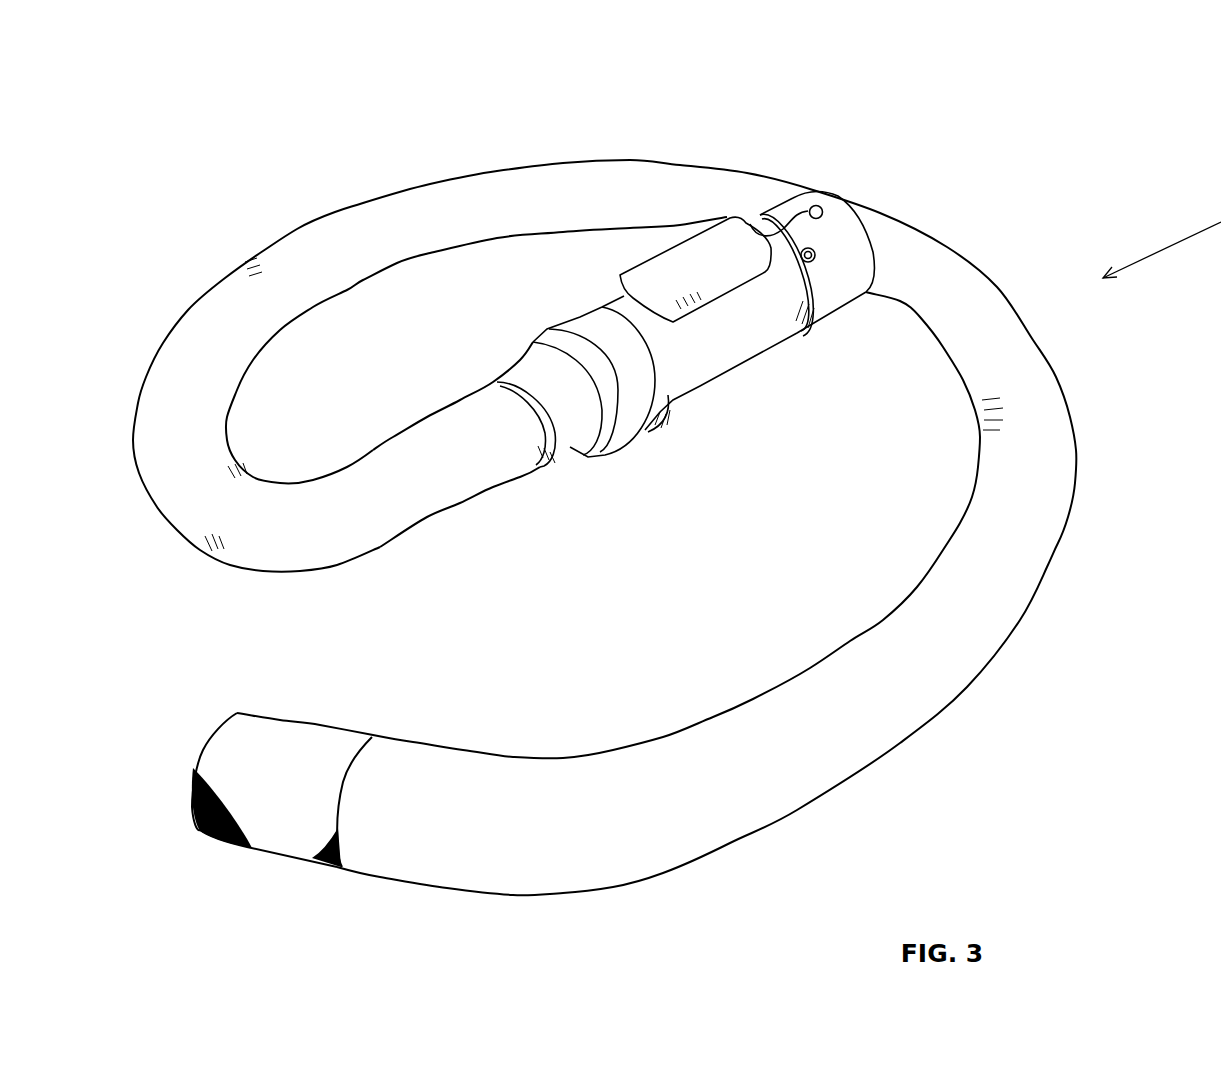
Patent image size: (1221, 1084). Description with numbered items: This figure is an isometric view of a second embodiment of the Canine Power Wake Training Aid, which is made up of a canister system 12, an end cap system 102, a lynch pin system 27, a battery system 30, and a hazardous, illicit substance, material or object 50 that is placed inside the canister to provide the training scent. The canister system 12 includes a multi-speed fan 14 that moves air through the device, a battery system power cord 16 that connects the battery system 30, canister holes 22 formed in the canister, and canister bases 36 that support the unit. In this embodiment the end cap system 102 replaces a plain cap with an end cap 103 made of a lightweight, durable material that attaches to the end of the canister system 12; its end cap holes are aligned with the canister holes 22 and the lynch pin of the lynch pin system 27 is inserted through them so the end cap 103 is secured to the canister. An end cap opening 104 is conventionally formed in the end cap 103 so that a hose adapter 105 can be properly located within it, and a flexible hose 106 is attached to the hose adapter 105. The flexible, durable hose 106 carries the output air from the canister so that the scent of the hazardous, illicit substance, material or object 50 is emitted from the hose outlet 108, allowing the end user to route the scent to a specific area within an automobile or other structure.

The canister system 12 is at (604, 467).
The multi-speed fan 14 is at (848, 293).
The battery system power cord 16 is at (604, 467).
The canister holes 22 is at (733, 367).
The lynch pin system 27 is at (684, 335).
The battery system 30 is at (725, 200).
The canister bases 36 is at (665, 414).
The hazardous, illicit substance, material or object 50 is at (803, 338).
The end cap system 102 is at (641, 436).
The end cap 103 is at (607, 451).
The end cap opening 104 is at (545, 361).
The hose adapter 105 is at (571, 452).
The flexible hose 106 is at (475, 498).
The hose outlet 108 is at (318, 725).